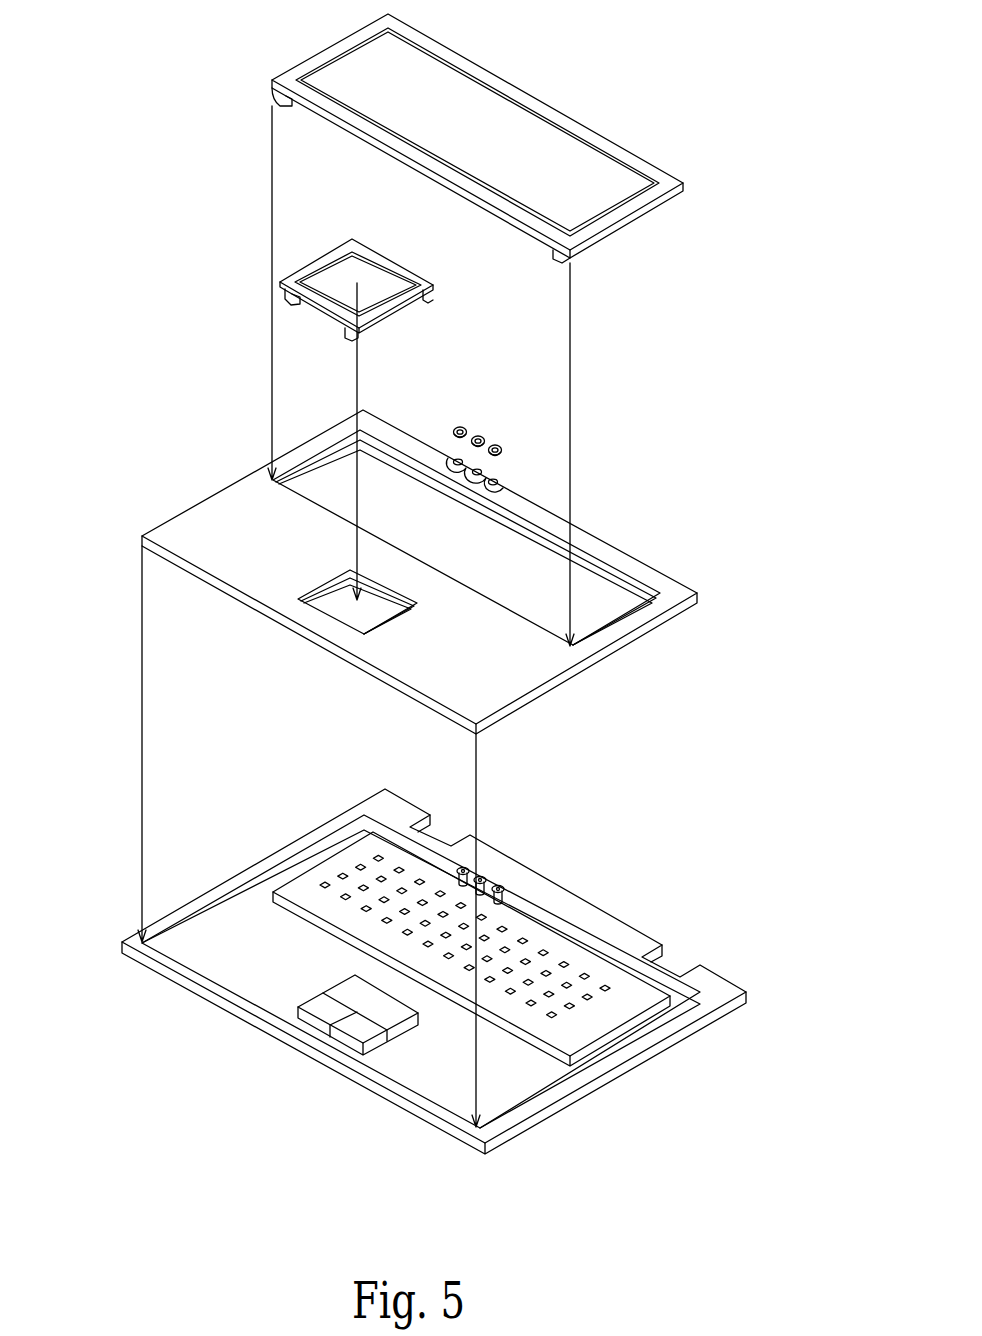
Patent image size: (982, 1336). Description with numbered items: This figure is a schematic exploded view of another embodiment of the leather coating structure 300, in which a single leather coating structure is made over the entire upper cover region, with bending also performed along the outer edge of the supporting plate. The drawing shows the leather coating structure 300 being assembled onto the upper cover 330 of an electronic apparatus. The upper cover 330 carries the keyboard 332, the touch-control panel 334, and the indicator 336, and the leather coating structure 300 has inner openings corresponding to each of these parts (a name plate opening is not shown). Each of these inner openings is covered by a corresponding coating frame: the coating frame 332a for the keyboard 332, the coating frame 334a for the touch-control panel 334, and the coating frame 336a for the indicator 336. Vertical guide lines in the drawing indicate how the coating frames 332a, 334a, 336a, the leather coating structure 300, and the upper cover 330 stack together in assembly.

The leather coating structure 300 is at (606, 697).
The upper cover 330 is at (522, 1083).
The keyboard 332 is at (630, 1010).
The touch-control panel 334 is at (350, 1033).
The indicator 336 is at (465, 868).
The coating frame 332a is at (623, 212).
The coating frame 334a is at (406, 298).
The coating frame 336a is at (498, 443).